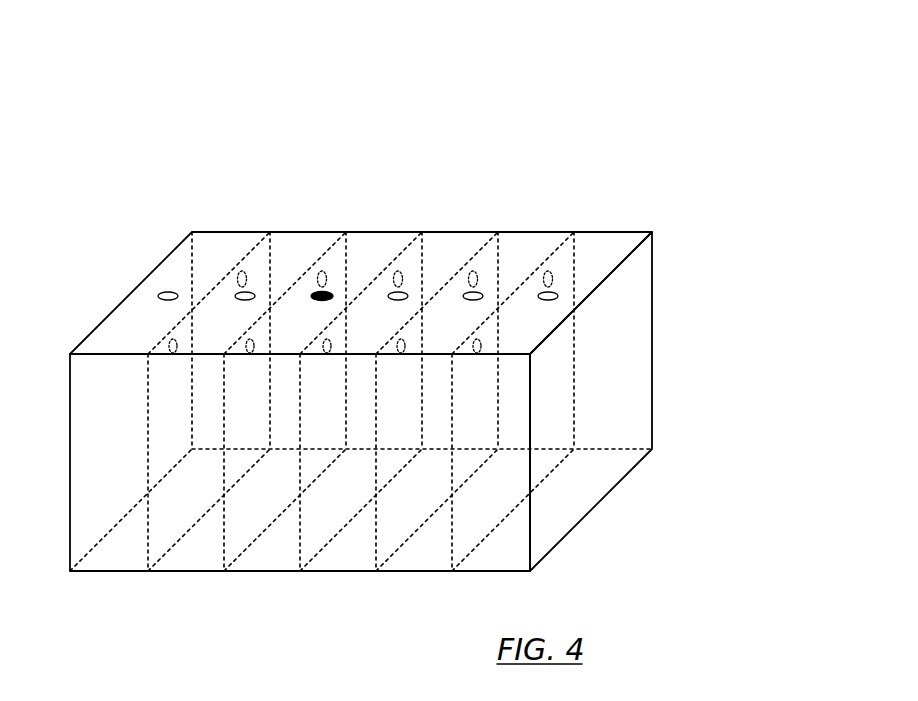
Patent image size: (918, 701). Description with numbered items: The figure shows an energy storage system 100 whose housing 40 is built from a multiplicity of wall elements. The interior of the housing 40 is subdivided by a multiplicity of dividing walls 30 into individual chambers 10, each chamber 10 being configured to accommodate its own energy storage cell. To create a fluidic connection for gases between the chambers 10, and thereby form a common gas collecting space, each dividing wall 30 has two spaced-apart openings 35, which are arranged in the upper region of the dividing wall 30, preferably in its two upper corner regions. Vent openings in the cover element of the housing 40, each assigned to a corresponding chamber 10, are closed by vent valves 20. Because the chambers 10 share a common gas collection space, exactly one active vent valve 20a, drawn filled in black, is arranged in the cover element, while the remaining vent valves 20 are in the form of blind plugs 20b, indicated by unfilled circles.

The energy storage system 100 is at (127, 192).
The chamber 10 is at (225, 248).
The vent valve 20 is at (358, 191).
The active vent valve 20a is at (324, 297).
The blind plug 20b is at (247, 297).
The dividing wall 30 is at (353, 328).
The opening 35 is at (398, 279).
The housing 40 is at (657, 364).